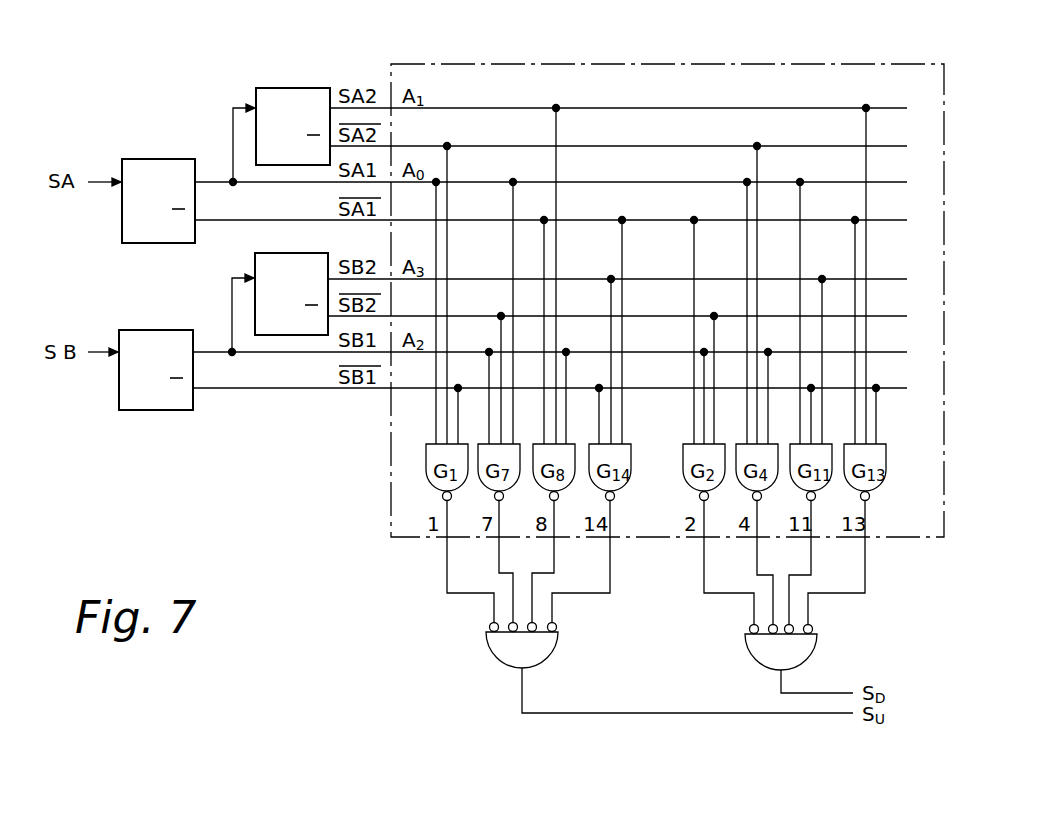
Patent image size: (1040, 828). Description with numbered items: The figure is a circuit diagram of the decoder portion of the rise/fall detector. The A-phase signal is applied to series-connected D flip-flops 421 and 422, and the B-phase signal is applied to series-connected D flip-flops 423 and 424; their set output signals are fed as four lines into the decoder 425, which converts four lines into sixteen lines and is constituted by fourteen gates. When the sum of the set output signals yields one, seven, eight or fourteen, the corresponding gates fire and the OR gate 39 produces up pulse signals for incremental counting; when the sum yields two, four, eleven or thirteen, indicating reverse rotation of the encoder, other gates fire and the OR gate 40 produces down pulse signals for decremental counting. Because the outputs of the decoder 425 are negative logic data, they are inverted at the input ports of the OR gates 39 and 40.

The D flip-flop 421 is at (151, 159).
The D flip-flop 422 is at (260, 89).
The D flip-flop 423 is at (143, 331).
The D flip-flop 424 is at (258, 256).
The decoder 425 is at (945, 165).
The OR gate 39 is at (555, 653).
The OR gate 40 is at (814, 655).